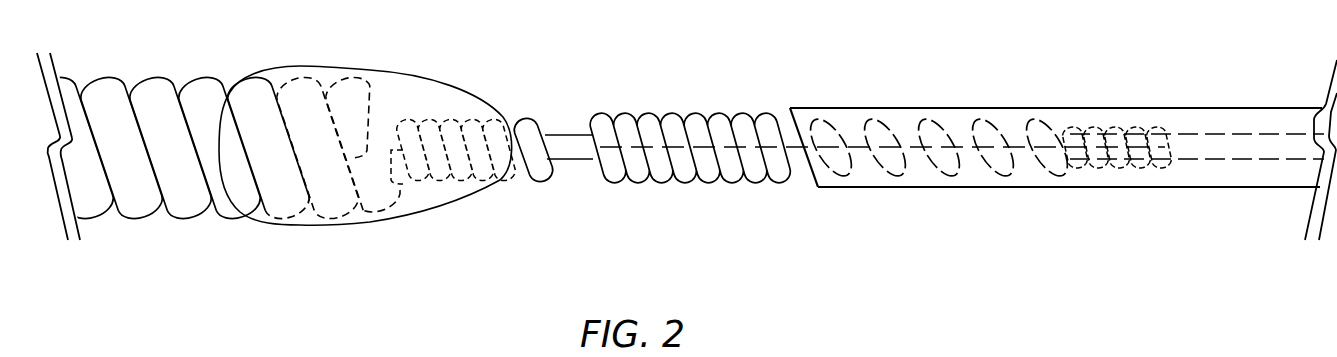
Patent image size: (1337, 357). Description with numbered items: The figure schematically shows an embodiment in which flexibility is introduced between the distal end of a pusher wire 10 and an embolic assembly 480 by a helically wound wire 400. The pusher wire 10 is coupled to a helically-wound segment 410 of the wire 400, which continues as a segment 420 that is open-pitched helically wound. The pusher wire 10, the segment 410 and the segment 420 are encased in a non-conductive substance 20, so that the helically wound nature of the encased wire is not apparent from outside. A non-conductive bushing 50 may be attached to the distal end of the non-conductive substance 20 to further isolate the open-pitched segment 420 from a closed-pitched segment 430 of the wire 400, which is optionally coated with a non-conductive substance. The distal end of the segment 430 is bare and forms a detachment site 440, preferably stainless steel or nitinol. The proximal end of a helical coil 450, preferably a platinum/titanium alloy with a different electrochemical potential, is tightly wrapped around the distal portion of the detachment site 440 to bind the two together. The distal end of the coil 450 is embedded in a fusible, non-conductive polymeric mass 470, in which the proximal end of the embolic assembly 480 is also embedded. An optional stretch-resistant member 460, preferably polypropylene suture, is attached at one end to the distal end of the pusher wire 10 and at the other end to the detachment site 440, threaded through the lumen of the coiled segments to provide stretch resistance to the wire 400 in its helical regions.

The pusher wire 10 is at (1269, 148).
The non-conductive substance 20 is at (1060, 112).
The non-conductive bushing 50 is at (845, 125).
The wire 400 is at (987, 136).
The helically-wound segment 410 is at (1078, 203).
The open-pitched segment 420 is at (1065, 203).
The closed-pitched segment 430 is at (605, 203).
The detachment site 440 is at (556, 134).
The helical coil 450 is at (522, 176).
The stretch-resistant member 460 is at (796, 137).
The fusible non-conductive polymeric mass 470 is at (399, 108).
The embolic assembly 480 is at (190, 200).